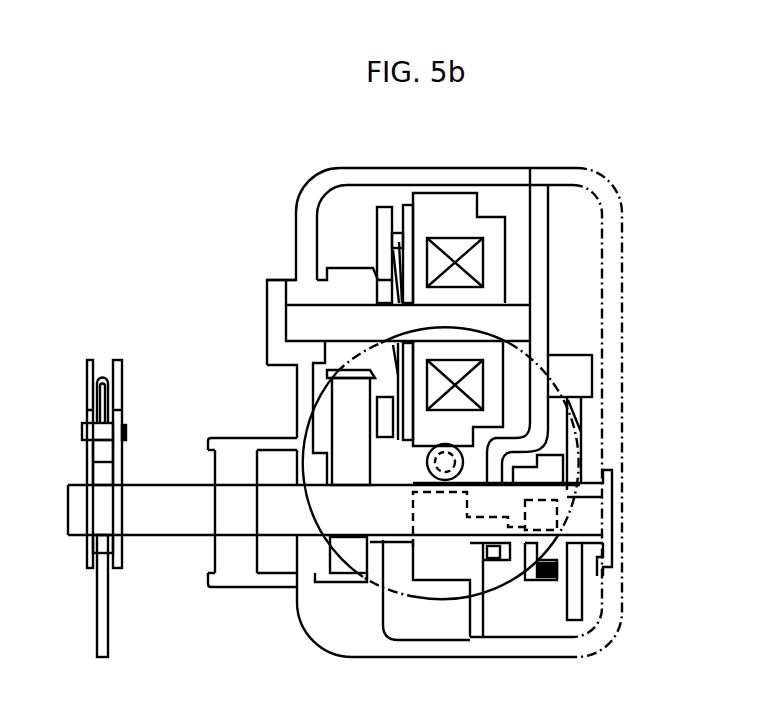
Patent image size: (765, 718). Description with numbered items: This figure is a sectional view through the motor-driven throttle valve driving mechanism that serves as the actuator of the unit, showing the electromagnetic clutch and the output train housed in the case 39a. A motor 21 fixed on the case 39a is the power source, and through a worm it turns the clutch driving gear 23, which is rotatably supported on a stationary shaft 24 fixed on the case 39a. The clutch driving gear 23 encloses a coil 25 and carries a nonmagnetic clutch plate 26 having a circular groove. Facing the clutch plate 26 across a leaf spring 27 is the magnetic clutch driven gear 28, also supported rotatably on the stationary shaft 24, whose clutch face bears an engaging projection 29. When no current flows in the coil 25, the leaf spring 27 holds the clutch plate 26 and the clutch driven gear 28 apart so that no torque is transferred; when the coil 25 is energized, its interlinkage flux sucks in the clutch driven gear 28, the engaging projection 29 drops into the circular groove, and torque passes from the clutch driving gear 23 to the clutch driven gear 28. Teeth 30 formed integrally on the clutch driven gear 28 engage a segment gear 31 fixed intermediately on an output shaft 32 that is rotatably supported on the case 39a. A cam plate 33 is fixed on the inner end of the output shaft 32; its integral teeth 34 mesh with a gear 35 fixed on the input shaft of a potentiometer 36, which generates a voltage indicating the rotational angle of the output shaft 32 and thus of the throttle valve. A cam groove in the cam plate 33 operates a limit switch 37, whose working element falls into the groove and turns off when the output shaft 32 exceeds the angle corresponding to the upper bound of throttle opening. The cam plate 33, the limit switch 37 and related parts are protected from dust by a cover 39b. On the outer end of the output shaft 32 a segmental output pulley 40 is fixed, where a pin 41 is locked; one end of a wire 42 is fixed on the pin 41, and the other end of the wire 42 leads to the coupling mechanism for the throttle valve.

The motor 21 is at (308, 462).
The clutch driving gear 23 is at (485, 228).
The stationary shaft 24 is at (518, 303).
The coil 25 is at (478, 258).
The clutch plate 26 is at (410, 208).
The leaf spring 27 is at (400, 243).
The clutch driven gear 28 is at (383, 212).
The engaging projection 29 is at (397, 240).
The teeth 30 is at (330, 268).
The segment gear 31 is at (347, 404).
The output shaft 32 is at (178, 485).
The cam plate 33 is at (574, 430).
The teeth 34 is at (547, 573).
The gear 35 is at (538, 580).
The potentiometer 36 is at (447, 602).
The limit switch 37 is at (584, 368).
The case 39a is at (448, 167).
The cover 39b is at (624, 194).
The output pulley 40 is at (87, 455).
The pin 41 is at (98, 432).
The wire 42 is at (104, 392).